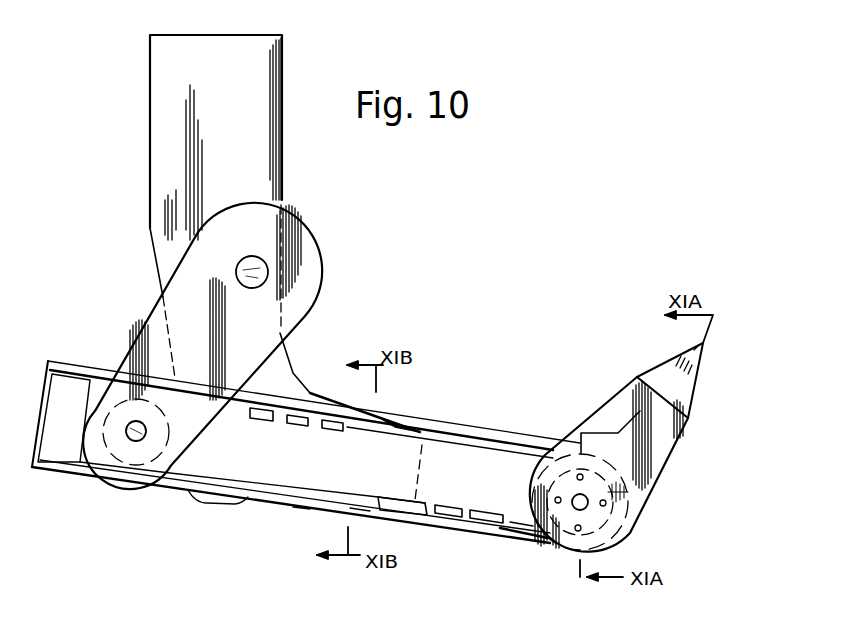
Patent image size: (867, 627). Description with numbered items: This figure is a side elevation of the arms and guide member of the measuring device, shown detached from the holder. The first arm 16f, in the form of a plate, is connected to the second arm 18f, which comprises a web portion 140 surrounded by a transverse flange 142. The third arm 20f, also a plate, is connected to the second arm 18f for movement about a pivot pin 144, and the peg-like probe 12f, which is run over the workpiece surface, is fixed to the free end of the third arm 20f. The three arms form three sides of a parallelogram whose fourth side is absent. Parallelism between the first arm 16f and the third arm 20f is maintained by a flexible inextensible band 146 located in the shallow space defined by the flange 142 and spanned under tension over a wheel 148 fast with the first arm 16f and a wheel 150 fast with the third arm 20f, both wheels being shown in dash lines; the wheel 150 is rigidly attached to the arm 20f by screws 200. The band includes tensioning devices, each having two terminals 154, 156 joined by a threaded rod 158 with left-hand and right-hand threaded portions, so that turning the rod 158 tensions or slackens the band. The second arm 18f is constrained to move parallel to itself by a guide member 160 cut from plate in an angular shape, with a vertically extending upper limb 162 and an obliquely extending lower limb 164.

The probe 12f is at (672, 365).
The first arm 16f is at (144, 323).
The second arm 18f is at (447, 420).
The third arm 20f is at (617, 412).
The web portion 140 is at (477, 457).
The transverse flange 142 is at (327, 510).
The pivot pin 144 is at (587, 512).
The flexible inextensible band 146 is at (525, 530).
The wheel 148 is at (122, 450).
The wheel 150 is at (630, 518).
The terminal 154 is at (423, 512).
The terminal 156 is at (487, 507).
The threaded rod 158 is at (483, 532).
The guide member 160 is at (303, 372).
The upper limb 162 is at (148, 228).
The lower limb 164 is at (207, 504).
The screws 200 is at (635, 495).